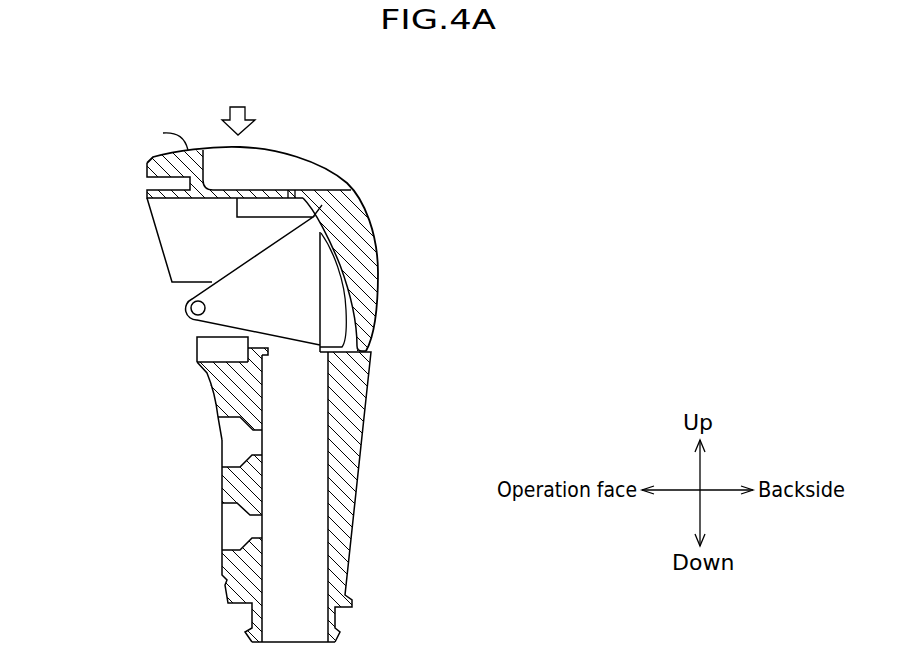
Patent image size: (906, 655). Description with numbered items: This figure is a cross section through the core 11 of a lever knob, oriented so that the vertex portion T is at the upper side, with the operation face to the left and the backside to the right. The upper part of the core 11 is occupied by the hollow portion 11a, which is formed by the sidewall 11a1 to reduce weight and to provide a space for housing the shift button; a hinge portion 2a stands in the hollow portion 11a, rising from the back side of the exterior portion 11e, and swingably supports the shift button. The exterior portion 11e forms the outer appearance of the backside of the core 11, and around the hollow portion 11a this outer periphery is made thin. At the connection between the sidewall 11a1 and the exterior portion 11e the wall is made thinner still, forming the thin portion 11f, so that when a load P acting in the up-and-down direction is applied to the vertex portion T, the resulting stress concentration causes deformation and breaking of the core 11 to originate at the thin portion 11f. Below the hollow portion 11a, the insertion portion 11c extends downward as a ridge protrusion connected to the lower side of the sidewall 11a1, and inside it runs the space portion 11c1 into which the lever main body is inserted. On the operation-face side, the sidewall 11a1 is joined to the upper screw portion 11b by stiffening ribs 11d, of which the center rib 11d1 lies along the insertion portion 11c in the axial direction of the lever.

The core 11 is at (400, 147).
The hollow portion 11a is at (220, 222).
The sidewall 11a1 is at (172, 225).
The upper screw portion 11b is at (217, 448).
The insertion portion 11c is at (347, 393).
The space portion 11c1 is at (303, 470).
The stiffening rib 11d is at (218, 491).
The center rib 11d1 is at (207, 395).
The exterior portion 11e is at (350, 213).
The thin portion 11f is at (360, 349).
The hinge portion 2a is at (191, 311).
The vertex portion T is at (163, 133).
The load P is at (238, 106).